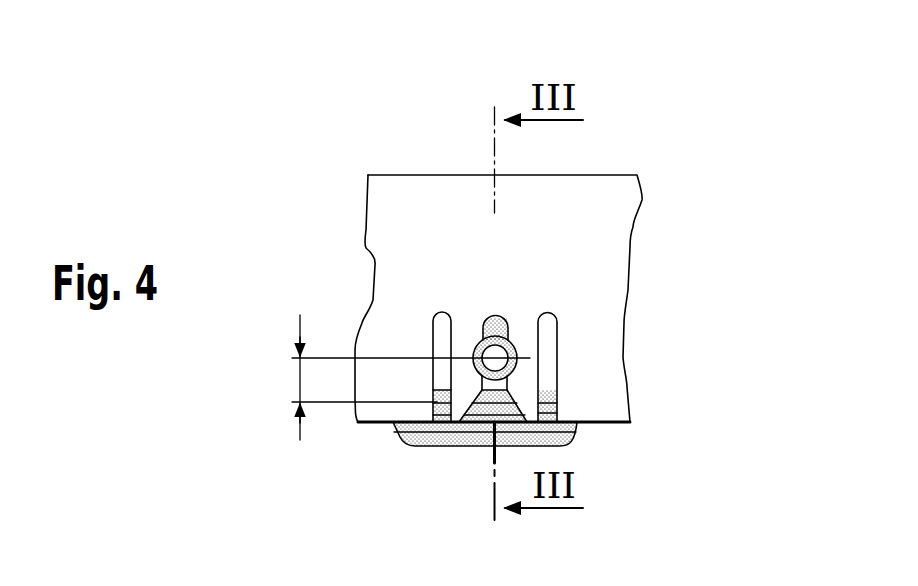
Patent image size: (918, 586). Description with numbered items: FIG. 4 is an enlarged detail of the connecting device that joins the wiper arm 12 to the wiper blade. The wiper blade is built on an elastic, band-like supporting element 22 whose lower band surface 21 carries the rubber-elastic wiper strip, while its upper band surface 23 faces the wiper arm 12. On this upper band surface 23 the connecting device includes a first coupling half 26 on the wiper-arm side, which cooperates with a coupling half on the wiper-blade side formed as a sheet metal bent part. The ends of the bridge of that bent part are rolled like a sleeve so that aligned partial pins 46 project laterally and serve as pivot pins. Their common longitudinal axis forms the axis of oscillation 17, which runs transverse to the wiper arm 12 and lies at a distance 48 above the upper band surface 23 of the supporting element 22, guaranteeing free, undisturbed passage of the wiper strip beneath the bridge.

The wiper arm 12 is at (600, 167).
The first coupling half 26 is at (348, 238).
The axis of oscillation 17 is at (510, 342).
The upper band surface 23 is at (551, 398).
The lower band surface 21 is at (478, 418).
The partial pins 46 is at (482, 373).
The supporting element 22 is at (540, 443).
The distance 48 is at (396, 377).